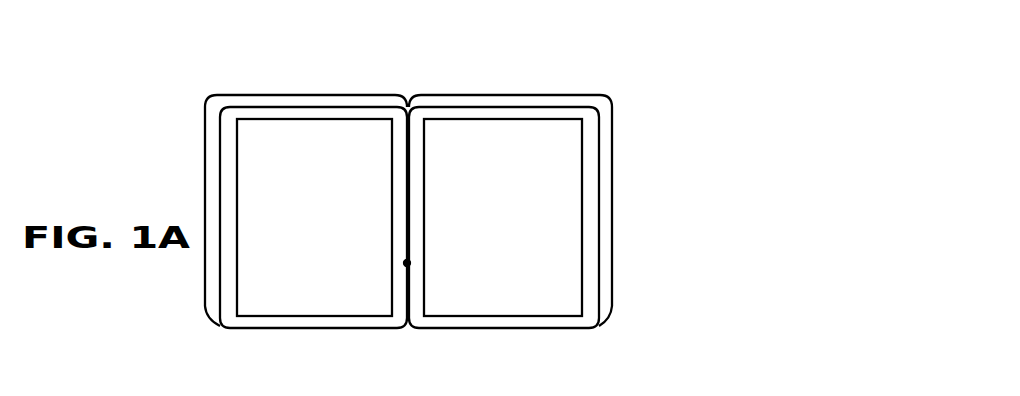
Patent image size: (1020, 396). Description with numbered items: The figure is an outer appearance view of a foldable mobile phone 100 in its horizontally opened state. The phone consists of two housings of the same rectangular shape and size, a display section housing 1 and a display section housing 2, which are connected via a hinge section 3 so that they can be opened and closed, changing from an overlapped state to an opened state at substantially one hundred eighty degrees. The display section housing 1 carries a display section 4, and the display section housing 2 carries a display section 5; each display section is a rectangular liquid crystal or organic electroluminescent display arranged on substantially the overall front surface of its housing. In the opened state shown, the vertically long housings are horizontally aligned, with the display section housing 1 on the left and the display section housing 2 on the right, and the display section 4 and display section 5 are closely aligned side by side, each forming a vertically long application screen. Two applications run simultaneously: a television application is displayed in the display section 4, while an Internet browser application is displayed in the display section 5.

The mobile phone 100 is at (714, 85).
The display section housing 1 is at (205, 138).
The display section housing 2 is at (555, 105).
The hinge section 3 is at (407, 263).
The display section 4 is at (347, 133).
The display section 5 is at (562, 158).